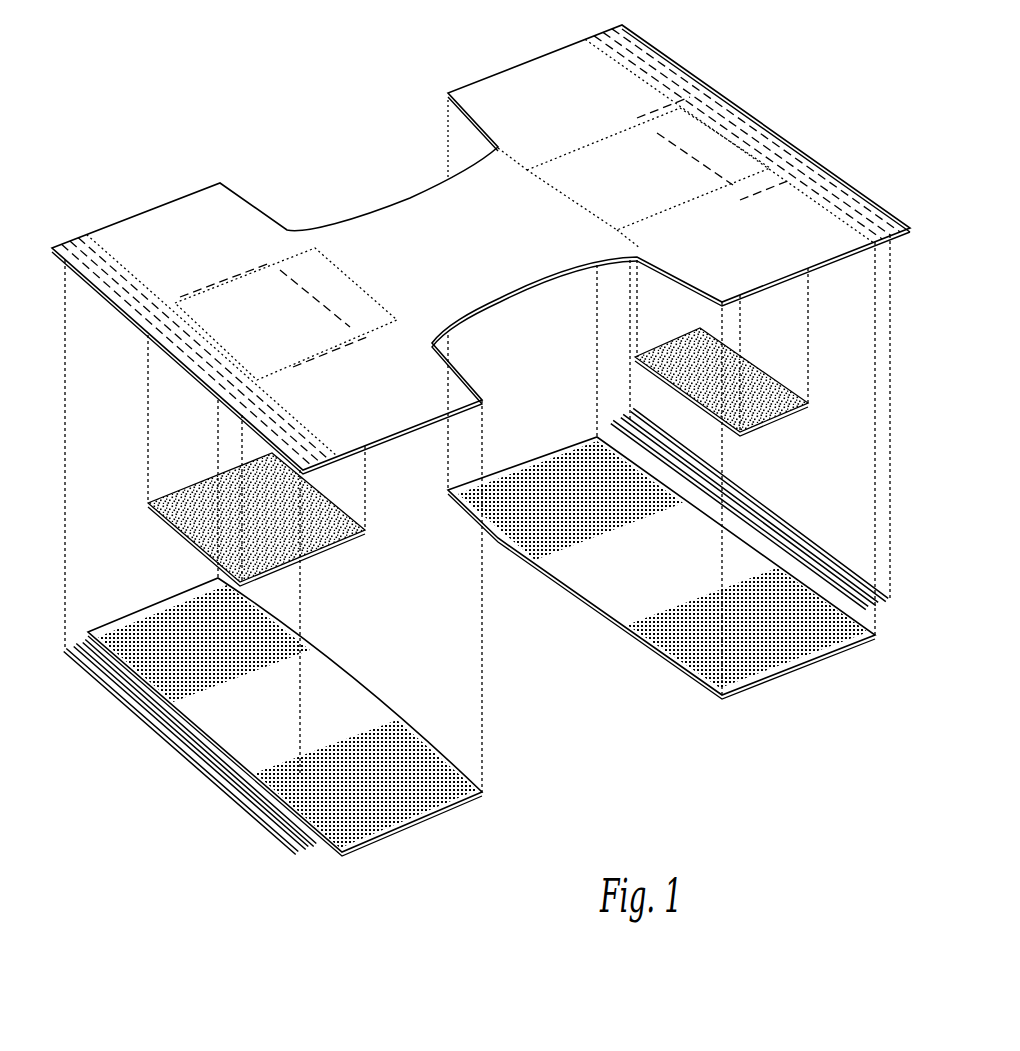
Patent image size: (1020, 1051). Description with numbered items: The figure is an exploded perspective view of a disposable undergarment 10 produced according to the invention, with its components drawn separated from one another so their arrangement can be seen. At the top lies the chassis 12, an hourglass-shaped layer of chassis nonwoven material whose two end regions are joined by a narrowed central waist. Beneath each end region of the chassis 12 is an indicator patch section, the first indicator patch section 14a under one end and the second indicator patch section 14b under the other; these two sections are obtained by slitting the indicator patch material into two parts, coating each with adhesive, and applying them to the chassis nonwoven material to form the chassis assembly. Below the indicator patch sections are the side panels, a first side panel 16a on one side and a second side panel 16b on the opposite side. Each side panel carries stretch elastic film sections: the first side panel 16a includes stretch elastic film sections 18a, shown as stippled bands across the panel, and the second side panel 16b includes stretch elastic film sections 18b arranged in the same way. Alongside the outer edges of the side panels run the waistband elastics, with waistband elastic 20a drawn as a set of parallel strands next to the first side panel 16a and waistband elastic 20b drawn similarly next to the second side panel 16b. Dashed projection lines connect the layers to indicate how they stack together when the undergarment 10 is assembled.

The undergarment 10 is at (306, 150).
The chassis 12 is at (505, 92).
The indicator patch section 14a is at (310, 545).
The indicator patch section 14b is at (767, 410).
The side panel 16a is at (345, 692).
The side panel 16b is at (625, 595).
The stretch elastic film section 18a is at (145, 632).
The stretch elastic film section 18b is at (553, 475).
The waistband elastic 20a is at (245, 808).
The waistband elastic 20b is at (782, 524).